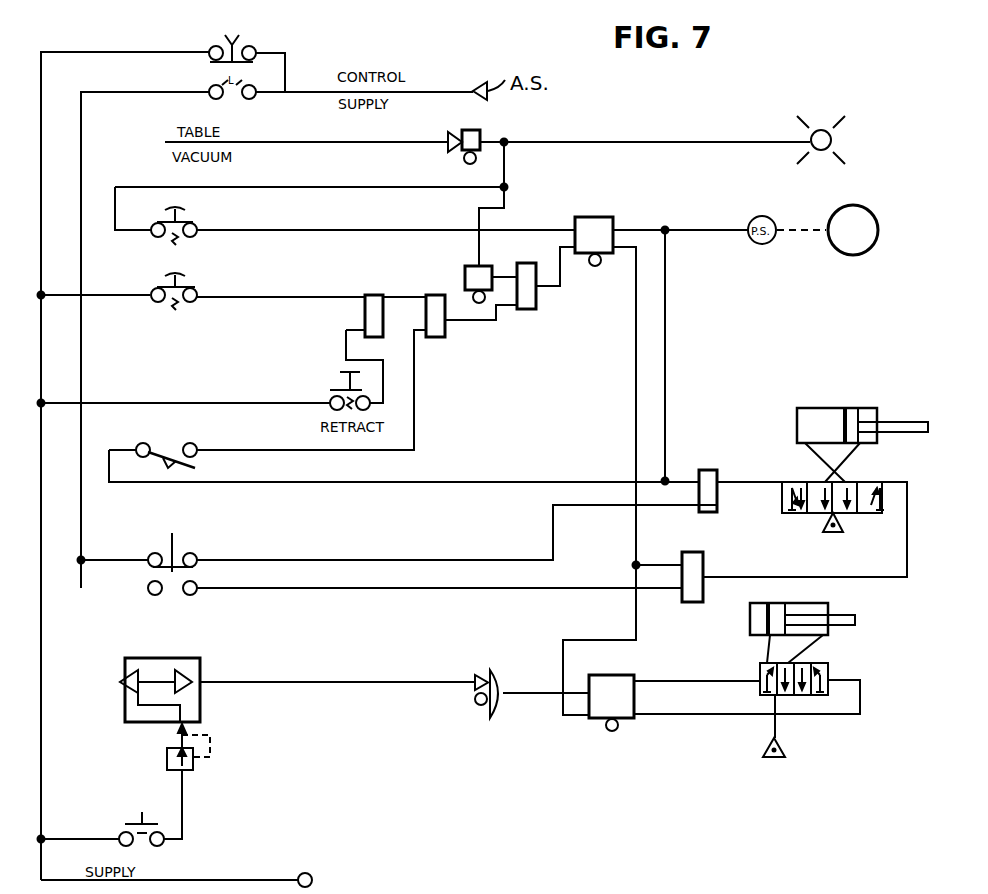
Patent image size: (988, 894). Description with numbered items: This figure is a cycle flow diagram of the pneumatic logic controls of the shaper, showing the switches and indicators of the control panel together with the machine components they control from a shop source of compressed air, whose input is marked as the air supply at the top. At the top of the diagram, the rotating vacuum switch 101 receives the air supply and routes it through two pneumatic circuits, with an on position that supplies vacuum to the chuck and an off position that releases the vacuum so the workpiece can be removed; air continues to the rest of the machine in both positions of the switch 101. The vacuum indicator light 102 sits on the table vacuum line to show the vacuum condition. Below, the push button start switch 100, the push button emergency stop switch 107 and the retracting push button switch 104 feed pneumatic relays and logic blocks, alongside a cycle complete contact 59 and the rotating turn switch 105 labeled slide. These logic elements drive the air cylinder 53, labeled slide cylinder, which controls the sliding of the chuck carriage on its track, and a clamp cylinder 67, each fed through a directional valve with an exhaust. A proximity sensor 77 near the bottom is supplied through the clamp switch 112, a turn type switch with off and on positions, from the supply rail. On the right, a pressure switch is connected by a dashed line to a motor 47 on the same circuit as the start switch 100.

The vacuum switch 101 is at (256, 48).
The vacuum indicator light 102 is at (822, 130).
The push button start switch 100 is at (193, 222).
The push button emergency stop switch 107 is at (193, 287).
The retracting push button switch 104 is at (340, 388).
The cycle complete limit switch 59 is at (195, 468).
The rotating turn switch 105 is at (190, 553).
The proximity sensor 77 is at (200, 664).
The clamp switch 112 is at (136, 822).
The air cylinder 53 is at (797, 428).
The clamp cylinder 67 is at (750, 620).
The motor 47 is at (845, 254).